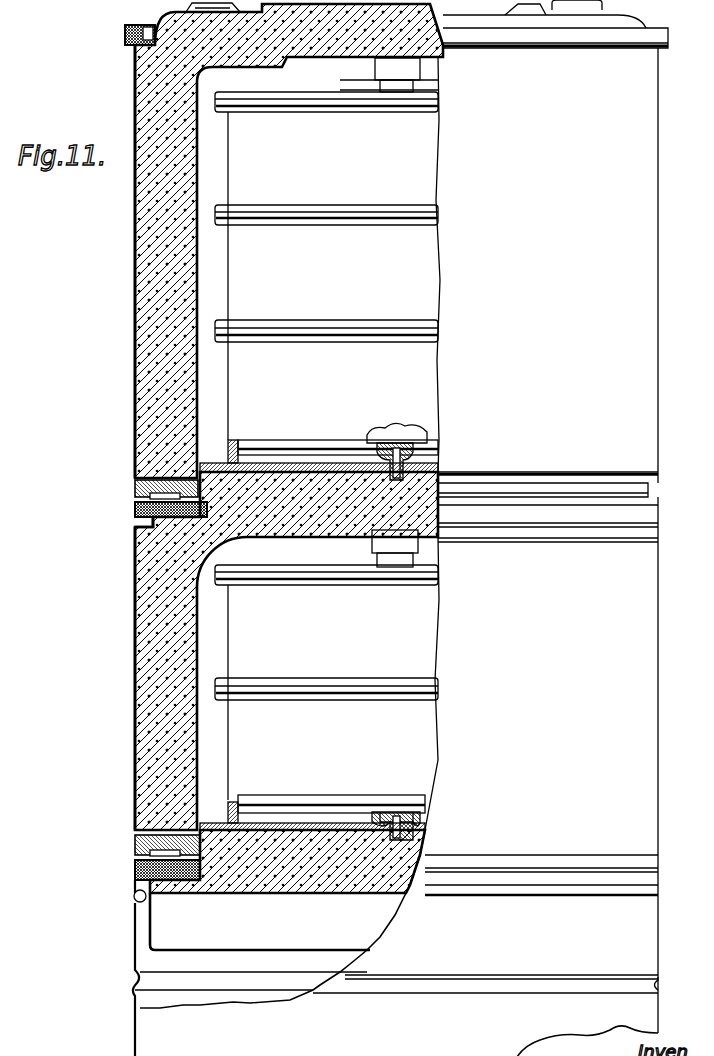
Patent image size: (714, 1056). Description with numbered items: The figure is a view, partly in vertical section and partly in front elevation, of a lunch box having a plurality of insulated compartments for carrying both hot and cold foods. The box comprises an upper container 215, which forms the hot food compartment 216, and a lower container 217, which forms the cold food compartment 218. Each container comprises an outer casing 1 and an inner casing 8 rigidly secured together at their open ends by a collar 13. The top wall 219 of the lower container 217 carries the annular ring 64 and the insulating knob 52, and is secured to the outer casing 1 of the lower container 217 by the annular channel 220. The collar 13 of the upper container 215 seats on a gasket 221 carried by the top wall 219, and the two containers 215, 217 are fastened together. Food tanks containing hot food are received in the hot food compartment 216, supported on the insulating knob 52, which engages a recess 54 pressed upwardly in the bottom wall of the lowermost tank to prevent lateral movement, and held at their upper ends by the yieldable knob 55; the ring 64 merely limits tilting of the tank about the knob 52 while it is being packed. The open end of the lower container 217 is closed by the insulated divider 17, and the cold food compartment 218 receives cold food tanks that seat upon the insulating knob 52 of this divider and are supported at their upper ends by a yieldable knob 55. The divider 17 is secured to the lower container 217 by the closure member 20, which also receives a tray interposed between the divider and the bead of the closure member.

The outer casing 1 is at (135, 88).
The inner casing 8 is at (197, 143).
The collar 13 is at (153, 480).
The insulated divider 17 is at (323, 900).
The closure member 20 is at (128, 955).
The insulating knob 52 is at (392, 440).
The recess 54 is at (234, 805).
The yieldable knob 55 is at (402, 557).
The annular ring 64 is at (234, 445).
The upper container 215 is at (128, 303).
The hot food compartment 216 is at (207, 248).
The lower container 217 is at (128, 711).
The cold food compartment 218 is at (207, 637).
The top wall 219 is at (300, 468).
The annular channel 220 is at (135, 506).
The gasket 221 is at (137, 528).